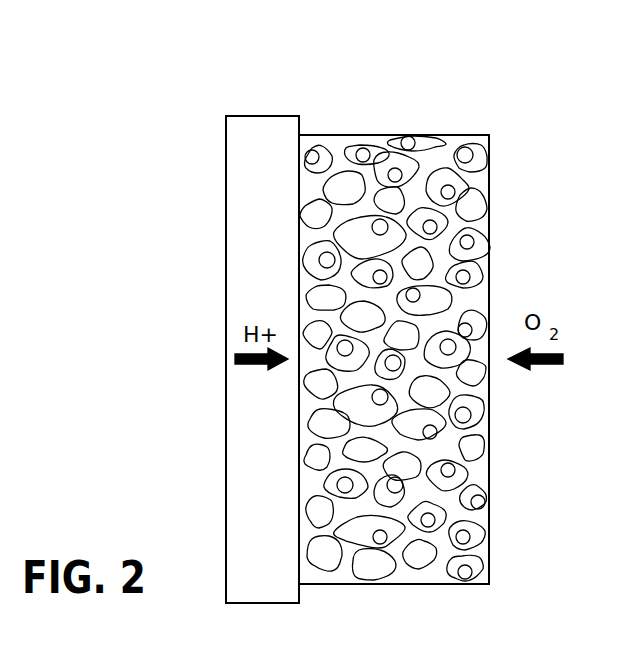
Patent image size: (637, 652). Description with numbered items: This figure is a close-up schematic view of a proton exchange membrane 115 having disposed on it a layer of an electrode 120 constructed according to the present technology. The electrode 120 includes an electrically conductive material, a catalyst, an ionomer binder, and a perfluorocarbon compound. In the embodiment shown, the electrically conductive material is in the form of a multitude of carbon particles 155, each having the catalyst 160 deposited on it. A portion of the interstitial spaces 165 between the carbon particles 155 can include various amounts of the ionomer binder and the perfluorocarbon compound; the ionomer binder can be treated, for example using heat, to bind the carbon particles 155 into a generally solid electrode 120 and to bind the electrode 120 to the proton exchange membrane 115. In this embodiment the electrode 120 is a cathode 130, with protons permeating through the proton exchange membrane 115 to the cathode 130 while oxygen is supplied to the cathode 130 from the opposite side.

The proton exchange membrane 115 is at (260, 116).
The electrode 120 is at (383, 135).
The cathode 130 is at (422, 341).
The carbon particles 155 is at (442, 166).
The catalyst 160 is at (455, 186).
The interstitial spaces 165 is at (442, 249).